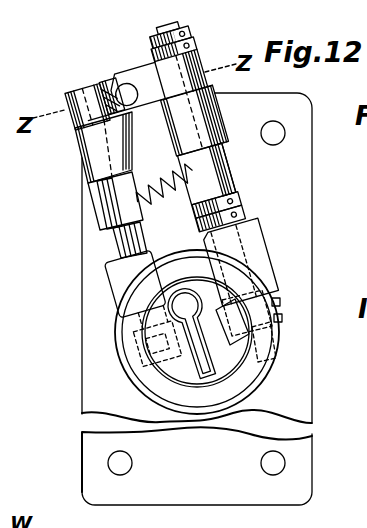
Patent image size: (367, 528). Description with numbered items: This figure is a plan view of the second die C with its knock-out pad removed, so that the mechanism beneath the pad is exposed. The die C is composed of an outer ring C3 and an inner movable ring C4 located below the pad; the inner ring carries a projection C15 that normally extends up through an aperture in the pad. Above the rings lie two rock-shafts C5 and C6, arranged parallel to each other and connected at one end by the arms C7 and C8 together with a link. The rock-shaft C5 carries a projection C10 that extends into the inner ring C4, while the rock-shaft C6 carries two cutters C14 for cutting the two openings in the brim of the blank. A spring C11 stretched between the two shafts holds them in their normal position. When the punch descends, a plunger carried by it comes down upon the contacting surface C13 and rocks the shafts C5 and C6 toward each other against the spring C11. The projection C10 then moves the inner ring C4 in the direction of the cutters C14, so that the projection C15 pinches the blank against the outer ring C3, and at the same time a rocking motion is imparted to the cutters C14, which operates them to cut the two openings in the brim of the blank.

The die C is at (297, 261).
The outer ring C3 is at (241, 284).
The inner movable ring C4 is at (172, 372).
The rock-shaft C5 is at (115, 247).
The rock-shaft C6 is at (246, 218).
The arm C7 is at (108, 86).
The arm C8 is at (145, 70).
The projection C10 is at (157, 350).
The spring C11 is at (156, 176).
The contacting surface C13 is at (88, 96).
The cutters C14 is at (281, 320).
The projection C15 is at (232, 318).